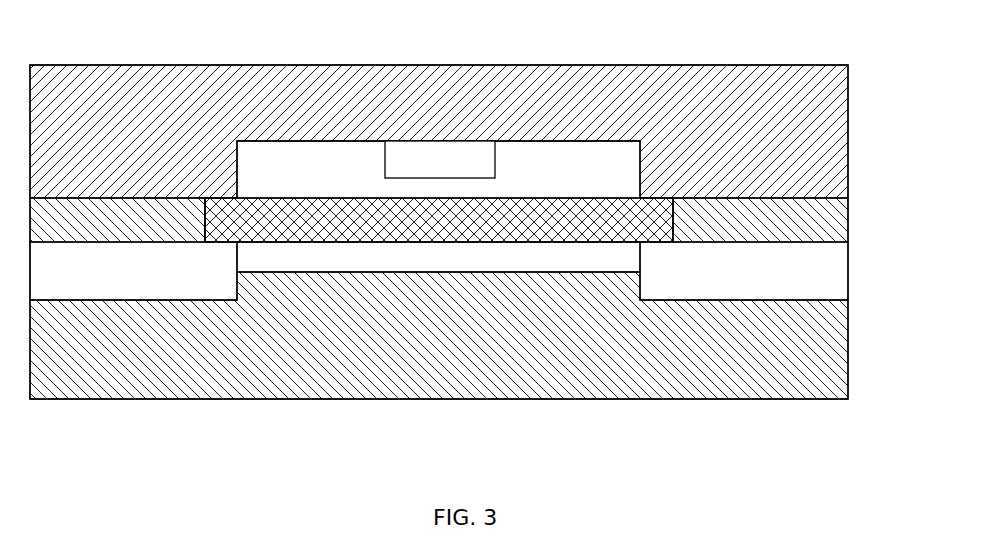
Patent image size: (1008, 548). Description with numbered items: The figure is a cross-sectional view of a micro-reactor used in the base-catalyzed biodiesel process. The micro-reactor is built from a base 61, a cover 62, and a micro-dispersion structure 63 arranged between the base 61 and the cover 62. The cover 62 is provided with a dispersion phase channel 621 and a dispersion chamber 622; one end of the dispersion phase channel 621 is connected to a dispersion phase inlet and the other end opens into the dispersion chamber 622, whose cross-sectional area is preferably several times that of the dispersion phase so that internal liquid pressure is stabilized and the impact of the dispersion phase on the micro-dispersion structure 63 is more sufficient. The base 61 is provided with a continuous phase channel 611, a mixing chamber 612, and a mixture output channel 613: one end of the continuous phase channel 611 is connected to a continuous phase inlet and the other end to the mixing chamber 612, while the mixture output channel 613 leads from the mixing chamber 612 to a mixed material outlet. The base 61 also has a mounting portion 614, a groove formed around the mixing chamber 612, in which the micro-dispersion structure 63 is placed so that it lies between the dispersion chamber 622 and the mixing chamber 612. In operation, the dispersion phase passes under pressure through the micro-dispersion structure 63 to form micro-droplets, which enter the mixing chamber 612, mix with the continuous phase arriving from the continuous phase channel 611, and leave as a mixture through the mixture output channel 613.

The base 61 is at (702, 388).
The continuous phase channel 611 is at (788, 270).
The mixing chamber 612 is at (433, 256).
The mixture output channel 613 is at (72, 279).
The mounting portion 614 is at (673, 233).
The cover 62 is at (733, 85).
The dispersion phase channel 621 is at (468, 150).
The dispersion chamber 622 is at (573, 158).
The micro-dispersion structure 63 is at (255, 210).